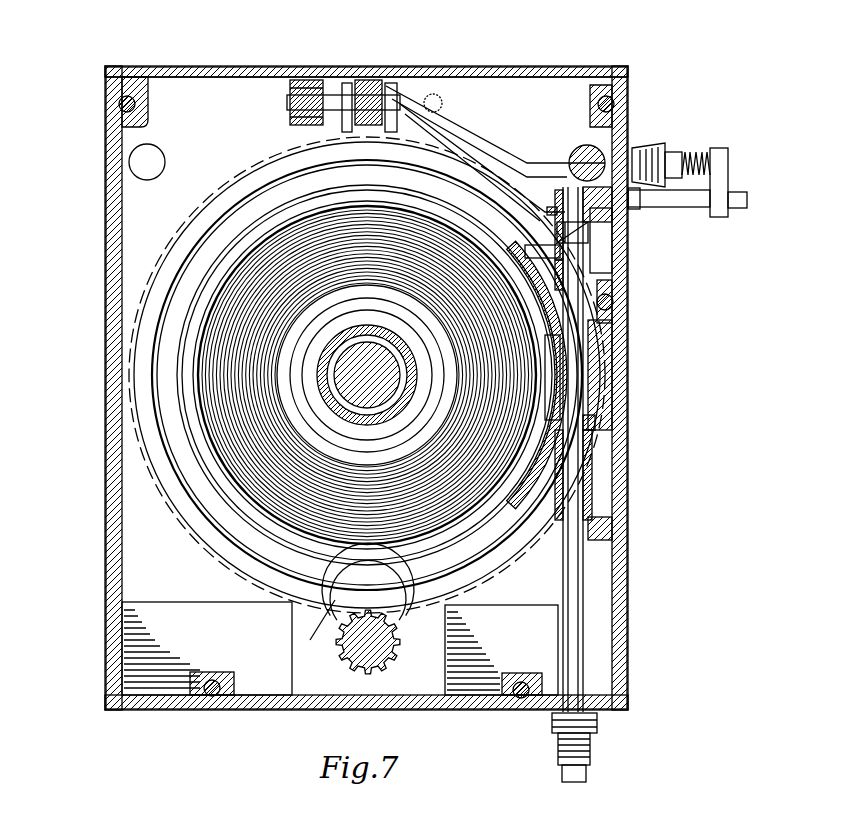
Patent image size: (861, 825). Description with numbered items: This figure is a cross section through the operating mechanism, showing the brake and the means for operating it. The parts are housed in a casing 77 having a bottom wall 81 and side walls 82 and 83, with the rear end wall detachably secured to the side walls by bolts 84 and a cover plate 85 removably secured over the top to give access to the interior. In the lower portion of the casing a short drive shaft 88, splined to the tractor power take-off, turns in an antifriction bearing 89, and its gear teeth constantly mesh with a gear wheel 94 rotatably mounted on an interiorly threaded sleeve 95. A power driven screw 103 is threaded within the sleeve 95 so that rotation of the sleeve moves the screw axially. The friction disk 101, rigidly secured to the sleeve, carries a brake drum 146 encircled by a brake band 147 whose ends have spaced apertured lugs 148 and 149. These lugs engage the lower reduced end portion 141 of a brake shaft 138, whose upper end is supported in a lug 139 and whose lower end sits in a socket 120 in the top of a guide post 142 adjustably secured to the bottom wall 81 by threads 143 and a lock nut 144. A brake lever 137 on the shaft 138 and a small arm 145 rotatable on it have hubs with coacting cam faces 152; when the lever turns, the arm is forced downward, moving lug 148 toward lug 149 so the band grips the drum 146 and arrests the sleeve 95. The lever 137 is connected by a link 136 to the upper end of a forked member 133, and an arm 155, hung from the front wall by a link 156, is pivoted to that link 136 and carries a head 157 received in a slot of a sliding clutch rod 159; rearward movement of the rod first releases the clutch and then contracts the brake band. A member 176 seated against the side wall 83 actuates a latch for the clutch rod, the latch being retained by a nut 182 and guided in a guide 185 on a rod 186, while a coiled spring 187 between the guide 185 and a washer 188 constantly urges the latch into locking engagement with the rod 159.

The casing 77 is at (100, 616).
The bottom wall 81 is at (470, 712).
The side wall 82 is at (105, 530).
The side wall 83 is at (628, 514).
The bolts 84 is at (118, 104).
The cover plate 85 is at (262, 66).
The drive shaft 88 is at (352, 672).
The antifriction bearing 89 is at (392, 674).
The gear wheel 94 is at (312, 632).
The interiorly threaded sleeve 95 is at (347, 332).
The friction disk 101 is at (280, 288).
The power driven screw 103 is at (345, 372).
The socket 120 is at (578, 484).
The forked member 133 is at (397, 88).
The link 136 is at (375, 92).
The brake lever 137 is at (487, 172).
The brake shaft 138 is at (583, 272).
The lug 139 is at (602, 214).
The lower reduced end portion 141 is at (572, 393).
The guide post 142 is at (617, 540).
The threads 143 is at (560, 760).
The lock nut 144 is at (555, 726).
The arm 145 is at (523, 250).
The brake drum 146 is at (265, 520).
The brake band 147 is at (455, 546).
The lug 148 is at (600, 341).
The lug 149 is at (590, 422).
The cam faces 152 is at (570, 231).
The arm 155 is at (290, 108).
The link 156 is at (290, 97).
The head 157 is at (570, 160).
The clutch rod 159 is at (583, 146).
The member 176 is at (648, 145).
The nut 182 is at (672, 152).
The guide 185 is at (718, 148).
The rod 186 is at (712, 199).
The coiled spring 187 is at (700, 197).
The washer 188 is at (696, 152).